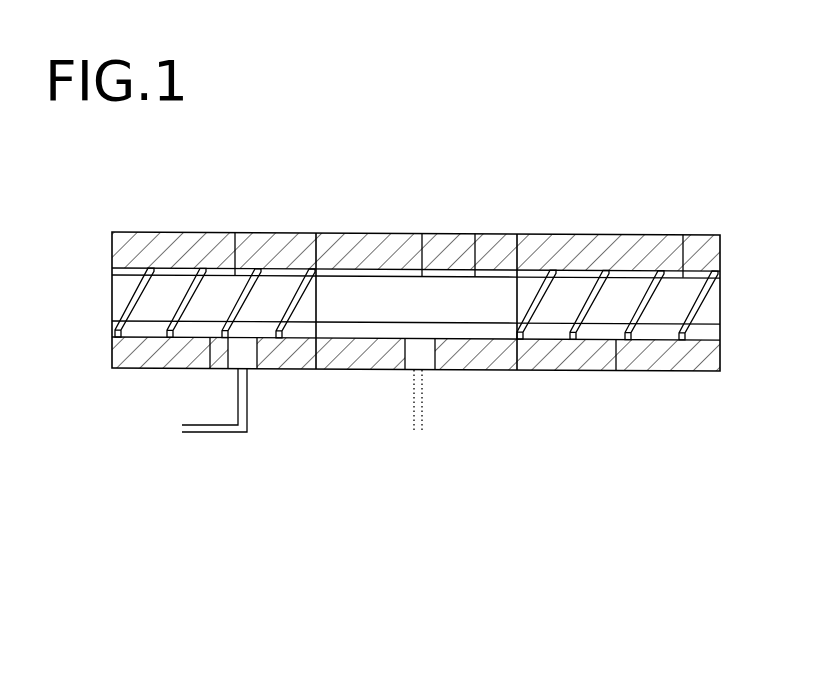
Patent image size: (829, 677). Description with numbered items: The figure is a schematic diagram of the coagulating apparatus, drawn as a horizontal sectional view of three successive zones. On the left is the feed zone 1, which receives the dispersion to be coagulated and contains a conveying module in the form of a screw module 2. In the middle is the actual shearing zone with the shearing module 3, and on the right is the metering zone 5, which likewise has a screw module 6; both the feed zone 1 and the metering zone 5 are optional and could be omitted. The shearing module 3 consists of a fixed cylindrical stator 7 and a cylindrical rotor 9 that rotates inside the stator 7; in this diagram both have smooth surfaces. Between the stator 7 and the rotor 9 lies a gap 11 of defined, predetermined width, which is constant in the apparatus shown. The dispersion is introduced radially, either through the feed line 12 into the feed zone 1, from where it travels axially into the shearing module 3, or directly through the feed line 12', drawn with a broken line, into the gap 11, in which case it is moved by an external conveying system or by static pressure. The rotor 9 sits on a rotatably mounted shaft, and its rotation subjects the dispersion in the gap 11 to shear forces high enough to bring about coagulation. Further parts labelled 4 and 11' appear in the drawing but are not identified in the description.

The feed zone 1 is at (277, 232).
The screw module 2 is at (176, 288).
The shearing module 3 is at (367, 232).
The second electrode 4 is at (563, 254).
The metering zone 5 is at (638, 233).
The screw module 6 is at (672, 298).
The stator 7 is at (447, 250).
The rotor 9 is at (495, 293).
The gap 11 is at (332, 350).
The electrode plates 11' is at (621, 348).
The feed line 12 is at (182, 392).
The feed line 12' is at (397, 391).